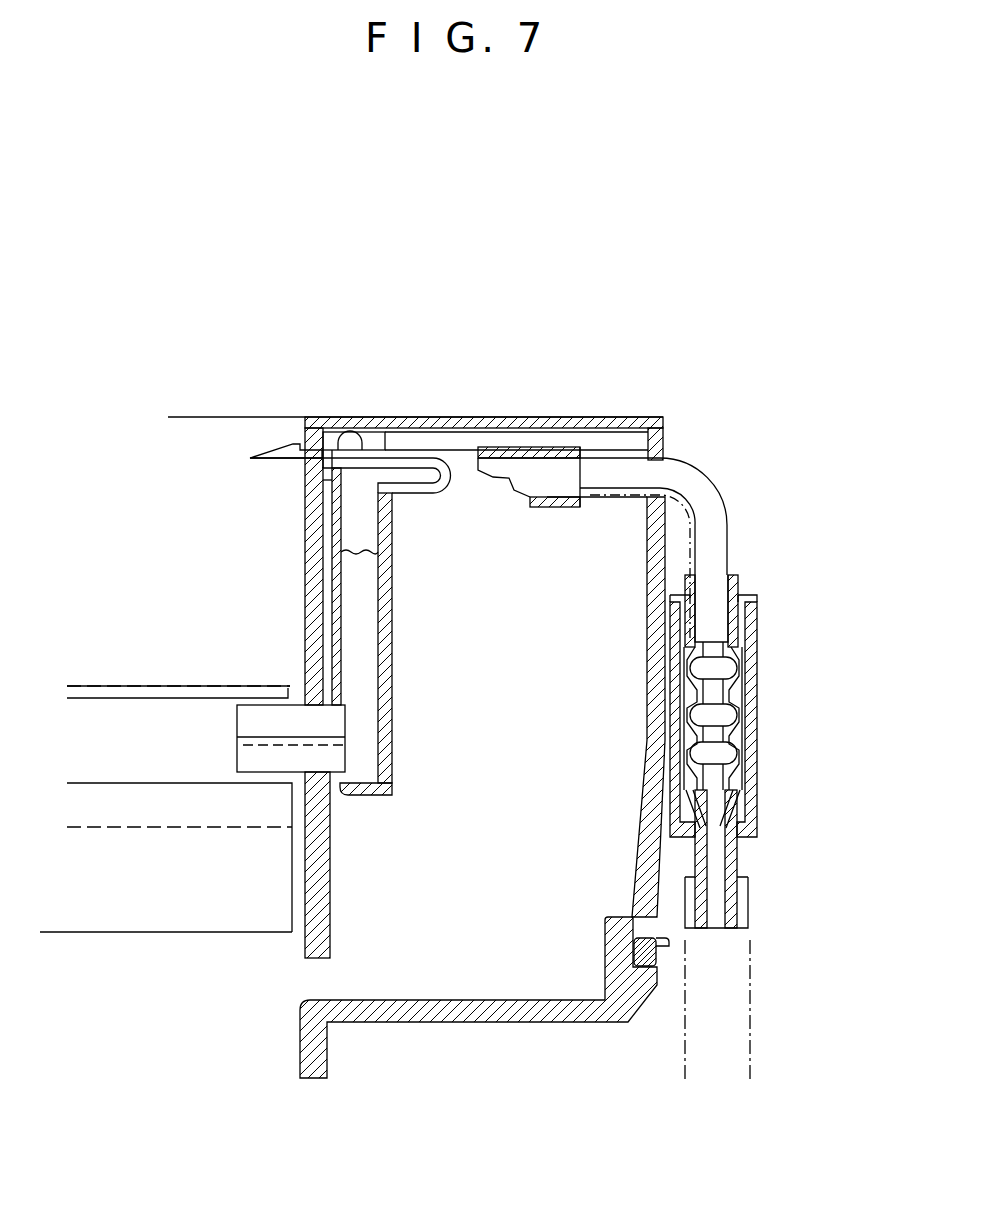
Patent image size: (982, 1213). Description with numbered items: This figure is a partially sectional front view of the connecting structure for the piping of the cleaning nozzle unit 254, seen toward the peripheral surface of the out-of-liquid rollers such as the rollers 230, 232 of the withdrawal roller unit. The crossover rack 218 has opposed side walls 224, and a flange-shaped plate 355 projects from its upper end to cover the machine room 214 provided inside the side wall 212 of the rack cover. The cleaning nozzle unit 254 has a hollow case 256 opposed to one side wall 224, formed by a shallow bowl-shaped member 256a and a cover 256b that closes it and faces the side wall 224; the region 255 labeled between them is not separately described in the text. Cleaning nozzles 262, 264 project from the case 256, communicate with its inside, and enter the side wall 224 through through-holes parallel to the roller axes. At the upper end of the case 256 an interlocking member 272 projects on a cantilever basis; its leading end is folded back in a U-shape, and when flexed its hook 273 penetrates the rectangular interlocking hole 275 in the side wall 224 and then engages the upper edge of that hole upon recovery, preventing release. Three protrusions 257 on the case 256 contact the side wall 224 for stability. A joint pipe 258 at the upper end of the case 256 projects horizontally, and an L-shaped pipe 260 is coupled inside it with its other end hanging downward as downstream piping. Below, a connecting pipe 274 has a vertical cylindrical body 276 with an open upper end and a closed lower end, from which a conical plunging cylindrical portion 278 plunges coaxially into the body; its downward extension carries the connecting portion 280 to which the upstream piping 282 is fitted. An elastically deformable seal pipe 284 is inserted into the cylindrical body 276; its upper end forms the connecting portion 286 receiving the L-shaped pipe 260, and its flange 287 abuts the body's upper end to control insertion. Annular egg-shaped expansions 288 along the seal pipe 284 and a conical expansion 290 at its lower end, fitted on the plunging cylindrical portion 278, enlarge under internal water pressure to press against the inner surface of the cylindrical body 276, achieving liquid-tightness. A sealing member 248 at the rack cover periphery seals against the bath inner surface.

The crossover rack 218 is at (208, 415).
The hook 273 is at (298, 442).
The interlocking member 272 is at (358, 440).
The joint pipe 258 is at (473, 450).
The flange-shaped plate 355 is at (536, 417).
The side wall 212 is at (646, 572).
The L-shaped pipe 260 is at (708, 497).
The connecting portion 286 is at (716, 600).
The seal pipe 284 is at (740, 655).
The flange 287 is at (672, 598).
The cylindrical body 276 is at (752, 680).
The expansions 288 is at (692, 665).
The plunging cylindrical portion 278 is at (752, 778).
The connecting pipe 274 is at (762, 793).
The expansion 290 is at (692, 795).
The connecting portion 280 is at (750, 897).
The sealing member 248 is at (660, 962).
The piping 282 is at (752, 1012).
The machine room 214 is at (475, 950).
The side wall 224 is at (332, 828).
The roller 232 is at (200, 920).
The roller 230 is at (140, 765).
The cleaning nozzle 262 is at (262, 762).
The cleaning nozzle 264 is at (263, 715).
The chamber 255 is at (360, 605).
The bowl-shaped member 256a is at (345, 585).
The cover 256b is at (392, 665).
The case 256 is at (392, 520).
The cleaning nozzle unit 254 is at (404, 612).
The protrusions 257 is at (330, 505).
The interlocking hole 275 is at (300, 480).